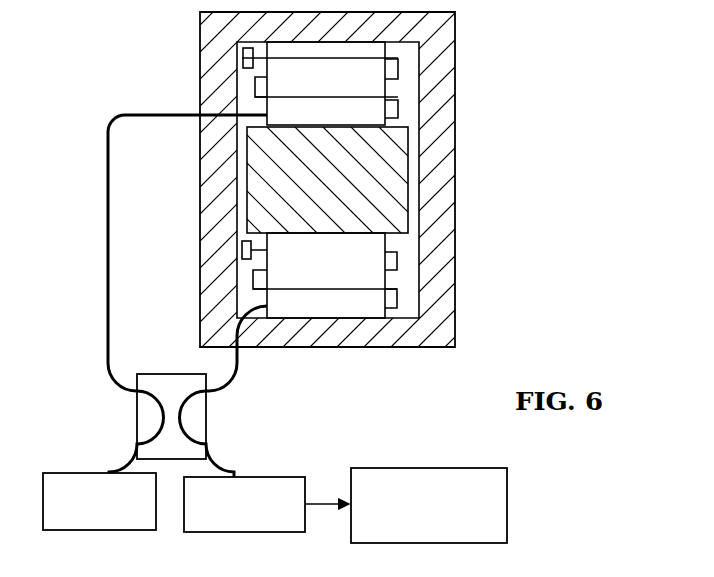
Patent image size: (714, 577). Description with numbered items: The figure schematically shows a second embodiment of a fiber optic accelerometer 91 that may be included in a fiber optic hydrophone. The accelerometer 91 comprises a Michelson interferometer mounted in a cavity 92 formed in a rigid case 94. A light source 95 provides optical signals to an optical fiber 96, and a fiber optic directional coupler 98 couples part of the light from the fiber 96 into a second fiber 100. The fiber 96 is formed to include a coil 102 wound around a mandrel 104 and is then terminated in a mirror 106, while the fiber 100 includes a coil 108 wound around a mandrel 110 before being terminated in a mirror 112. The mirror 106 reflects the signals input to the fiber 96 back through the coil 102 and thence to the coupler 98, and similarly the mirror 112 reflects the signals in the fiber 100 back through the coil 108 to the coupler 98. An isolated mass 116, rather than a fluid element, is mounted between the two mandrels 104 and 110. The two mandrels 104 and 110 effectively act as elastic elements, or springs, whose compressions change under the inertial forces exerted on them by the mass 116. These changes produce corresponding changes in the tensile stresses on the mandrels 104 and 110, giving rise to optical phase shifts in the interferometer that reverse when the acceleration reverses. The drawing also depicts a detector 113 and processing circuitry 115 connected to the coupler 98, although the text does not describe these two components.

The fiber optic sensor assembly 91 is at (524, 167).
The housing 92 is at (408, 317).
The housing bottom wall 94 is at (327, 350).
The light source 95 is at (72, 473).
The input optical fiber 96 is at (108, 257).
The optical coupler 98 is at (116, 398).
The return optical fiber 100 is at (235, 373).
The upper coil 102 is at (404, 87).
The upper coil terminal 104 is at (267, 107).
The upper coil lead 106 is at (242, 59).
The lower coil 108 is at (400, 279).
The lower coil terminal 110 is at (267, 297).
The lower coil lead 112 is at (242, 250).
The detector 113 is at (277, 476).
The processing circuitry 115 is at (507, 514).
The magnetostrictive core 116 is at (410, 157).